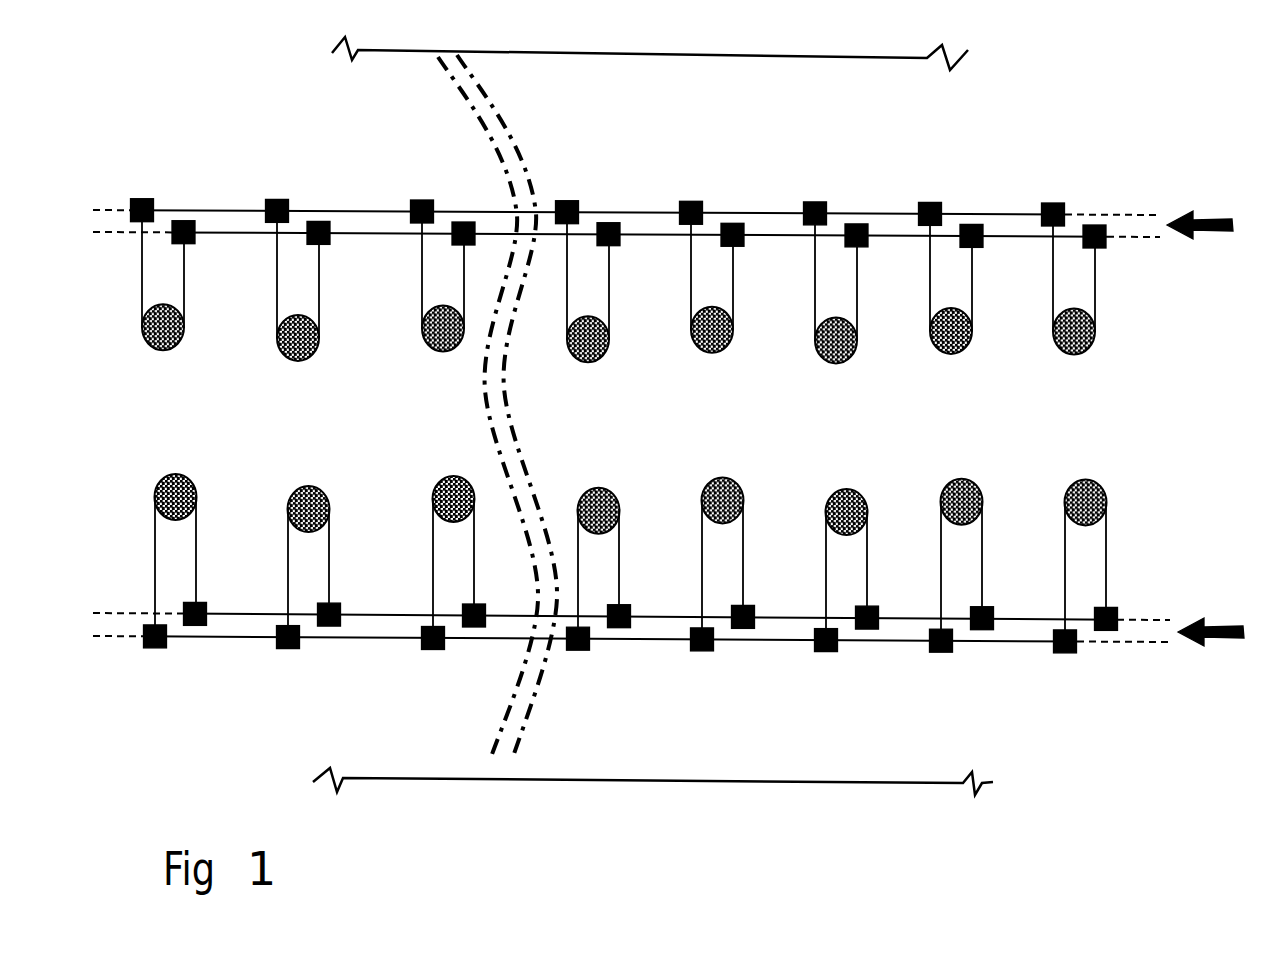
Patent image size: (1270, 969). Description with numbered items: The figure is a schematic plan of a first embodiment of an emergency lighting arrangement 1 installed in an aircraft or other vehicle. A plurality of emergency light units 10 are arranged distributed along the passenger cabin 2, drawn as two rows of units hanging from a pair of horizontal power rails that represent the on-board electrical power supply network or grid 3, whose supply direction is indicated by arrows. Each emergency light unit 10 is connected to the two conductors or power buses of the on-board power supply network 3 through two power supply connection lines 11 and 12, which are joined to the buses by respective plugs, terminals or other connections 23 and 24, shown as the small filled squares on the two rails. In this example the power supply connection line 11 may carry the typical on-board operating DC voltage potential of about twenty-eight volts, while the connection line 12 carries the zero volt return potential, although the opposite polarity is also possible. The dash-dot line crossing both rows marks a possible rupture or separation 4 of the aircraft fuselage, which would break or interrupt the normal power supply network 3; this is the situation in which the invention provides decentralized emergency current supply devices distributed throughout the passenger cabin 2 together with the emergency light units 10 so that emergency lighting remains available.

The emergency lighting arrangement 1 is at (172, 147).
The passenger cabin 2 is at (674, 150).
The on-board electrical power supply network 3 is at (1205, 218).
The rupture/separation 4 is at (513, 750).
The emergency light unit 10 is at (177, 477).
The power supply connection line 11 is at (154, 568).
The power supply connection line 12 is at (197, 570).
The connection 23 is at (205, 628).
The connection 24 is at (155, 650).